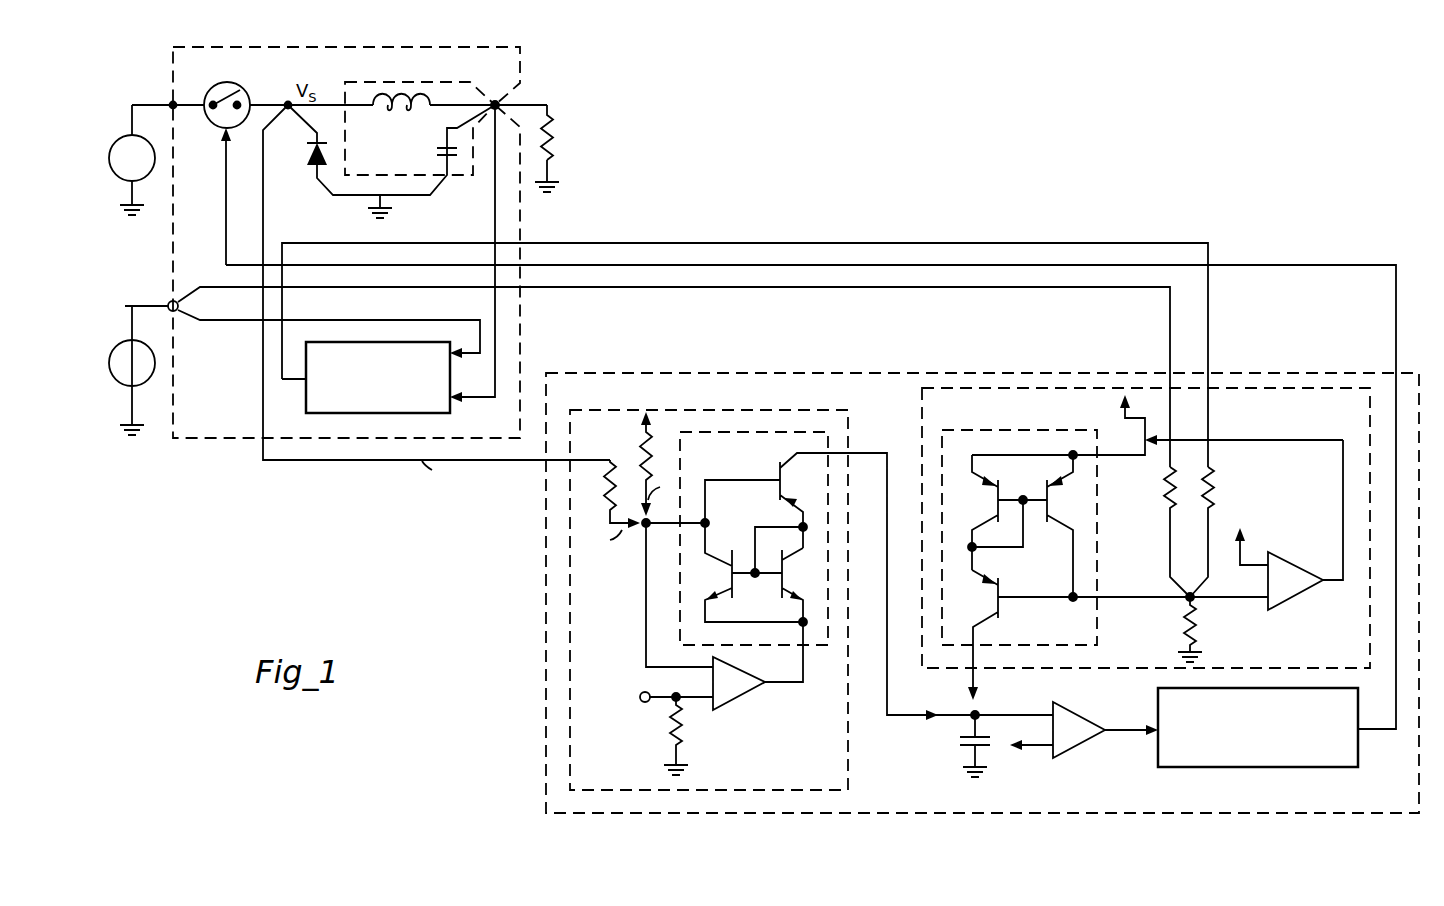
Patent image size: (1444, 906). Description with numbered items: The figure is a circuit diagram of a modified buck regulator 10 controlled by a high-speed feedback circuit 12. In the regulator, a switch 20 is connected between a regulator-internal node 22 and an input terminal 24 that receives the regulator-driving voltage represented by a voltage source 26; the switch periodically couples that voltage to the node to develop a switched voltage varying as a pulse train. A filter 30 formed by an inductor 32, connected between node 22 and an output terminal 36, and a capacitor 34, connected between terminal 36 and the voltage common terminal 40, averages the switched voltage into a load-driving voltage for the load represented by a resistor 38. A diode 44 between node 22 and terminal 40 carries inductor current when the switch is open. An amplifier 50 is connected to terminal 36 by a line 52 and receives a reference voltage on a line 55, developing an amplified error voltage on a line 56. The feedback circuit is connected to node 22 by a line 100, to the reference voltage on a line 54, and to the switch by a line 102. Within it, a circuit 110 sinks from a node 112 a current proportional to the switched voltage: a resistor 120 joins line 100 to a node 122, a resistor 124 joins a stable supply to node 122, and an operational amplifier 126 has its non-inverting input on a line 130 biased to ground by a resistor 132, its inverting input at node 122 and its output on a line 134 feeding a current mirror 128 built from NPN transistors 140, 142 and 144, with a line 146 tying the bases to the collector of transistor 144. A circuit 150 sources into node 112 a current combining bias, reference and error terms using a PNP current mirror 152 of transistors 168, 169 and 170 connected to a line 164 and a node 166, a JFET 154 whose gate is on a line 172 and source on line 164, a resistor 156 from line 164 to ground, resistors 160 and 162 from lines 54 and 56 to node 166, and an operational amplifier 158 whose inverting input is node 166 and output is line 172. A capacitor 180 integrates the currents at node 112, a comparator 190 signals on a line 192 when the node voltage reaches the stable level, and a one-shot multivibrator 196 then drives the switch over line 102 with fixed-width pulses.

The modified buck regulator 10 is at (247, 440).
The high-speed feedback circuit 12 is at (540, 556).
The switch 20 is at (214, 88).
The regulator-internal node 22 is at (287, 102).
The input terminal 24 is at (170, 103).
The voltage source 26 is at (125, 142).
The filter 30 is at (398, 80).
The inductor 32 is at (386, 107).
The capacitor 34 is at (443, 148).
The output terminal 36 is at (495, 100).
The resistor 38 is at (553, 138).
The voltage common terminal 40 is at (124, 210).
The diode 44 is at (305, 158).
The amplifier 50 is at (305, 410).
The line 52 is at (495, 226).
The line 54 is at (556, 288).
The line 55 is at (374, 320).
The line 56 is at (556, 243).
The line 100 is at (528, 462).
The line 102 is at (1395, 303).
The circuit 110 is at (848, 790).
The node 112 is at (970, 713).
The resistor 120 is at (618, 452).
The node 122 is at (642, 530).
The resistor 124 is at (640, 426).
The operational amplifier 126 is at (740, 700).
The current mirror 128 is at (735, 646).
The line 130 is at (704, 705).
The biasing resistor 132 is at (668, 735).
The line 134 is at (805, 668).
The transistor 140 is at (780, 462).
The transistor 142 is at (728, 576).
The transistor 144 is at (784, 576).
The line 146 is at (796, 526).
The circuit 150 is at (1325, 667).
The current mirror 152 is at (992, 645).
The N-channel junction-type field-effect transistor 154 is at (1145, 458).
The resistor 156 is at (1196, 630).
The operational amplifier 158 is at (1300, 596).
The resistor 160 is at (1167, 490).
The resistor 162 is at (1213, 490).
The line 164 is at (1143, 455).
The node 166 is at (1188, 597).
The transistor 168 is at (1000, 590).
The transistor 169 is at (996, 502).
The transistor 170 is at (1049, 502).
The line 172 is at (1343, 494).
The capacitor 180 is at (962, 748).
The comparator 190 is at (1078, 748).
The line 192 is at (1128, 730).
The monostable (one-shot) multivibrator 196 is at (1248, 768).